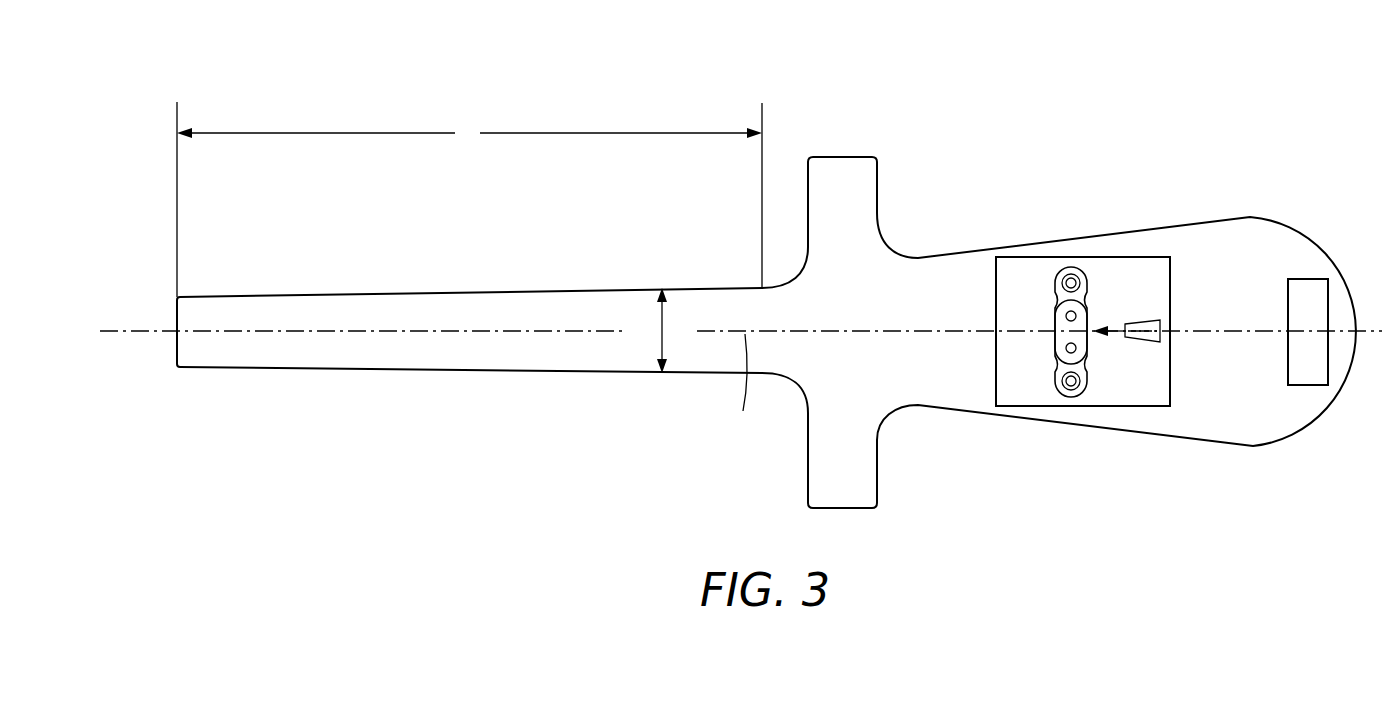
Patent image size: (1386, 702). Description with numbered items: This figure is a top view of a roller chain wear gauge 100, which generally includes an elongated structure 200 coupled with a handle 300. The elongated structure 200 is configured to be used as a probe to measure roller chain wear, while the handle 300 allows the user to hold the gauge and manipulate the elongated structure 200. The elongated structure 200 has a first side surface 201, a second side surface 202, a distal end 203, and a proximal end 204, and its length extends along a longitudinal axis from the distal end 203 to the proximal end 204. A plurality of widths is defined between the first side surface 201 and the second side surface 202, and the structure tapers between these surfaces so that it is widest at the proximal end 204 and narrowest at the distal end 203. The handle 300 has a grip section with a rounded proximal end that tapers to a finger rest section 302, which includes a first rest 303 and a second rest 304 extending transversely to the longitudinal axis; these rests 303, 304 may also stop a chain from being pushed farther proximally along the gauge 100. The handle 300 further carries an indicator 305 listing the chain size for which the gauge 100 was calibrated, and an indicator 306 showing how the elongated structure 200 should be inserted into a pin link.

The roller chain wear gauge 100 is at (237, 68).
The elongated structure 200 is at (459, 355).
The first side surface 201 is at (565, 375).
The second side surface 202 is at (460, 291).
The distal end 203 is at (177, 308).
The proximal end 204 is at (762, 284).
The handle 300 is at (1051, 269).
The finger rest section 302 is at (842, 269).
The first rest 303 is at (808, 496).
The second rest 304 is at (870, 183).
The indicator 305 is at (1305, 386).
The indicator 306 is at (1123, 407).